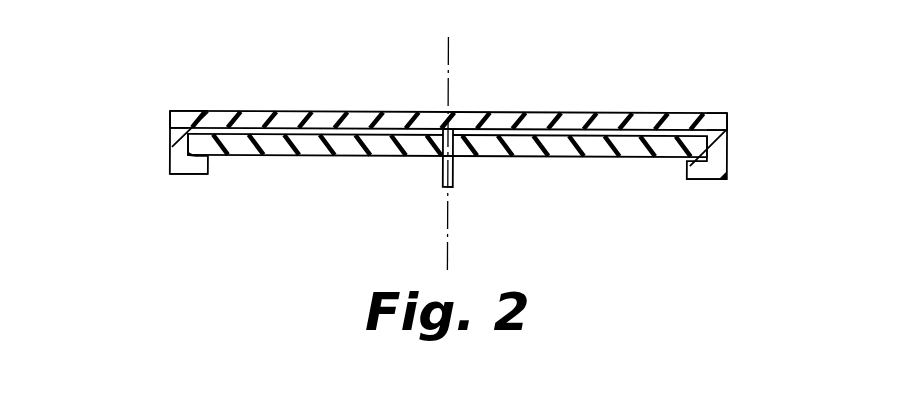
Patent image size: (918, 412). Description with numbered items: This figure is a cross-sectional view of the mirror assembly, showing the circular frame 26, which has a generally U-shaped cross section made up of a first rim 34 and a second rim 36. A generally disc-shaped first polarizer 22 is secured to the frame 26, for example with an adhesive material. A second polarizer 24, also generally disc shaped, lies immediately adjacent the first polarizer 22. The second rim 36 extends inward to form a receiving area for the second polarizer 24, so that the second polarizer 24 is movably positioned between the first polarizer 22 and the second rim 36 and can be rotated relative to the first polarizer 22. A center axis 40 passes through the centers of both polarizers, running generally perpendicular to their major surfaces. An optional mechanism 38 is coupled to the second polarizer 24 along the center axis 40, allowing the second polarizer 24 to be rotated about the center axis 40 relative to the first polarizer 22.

The first polarizer 22 is at (522, 112).
The second polarizer 24 is at (565, 158).
The frame 26 is at (170, 127).
The first rim 34 is at (183, 111).
The second rim 36 is at (182, 176).
The mechanism 38 is at (443, 183).
The center axis 40 is at (448, 50).